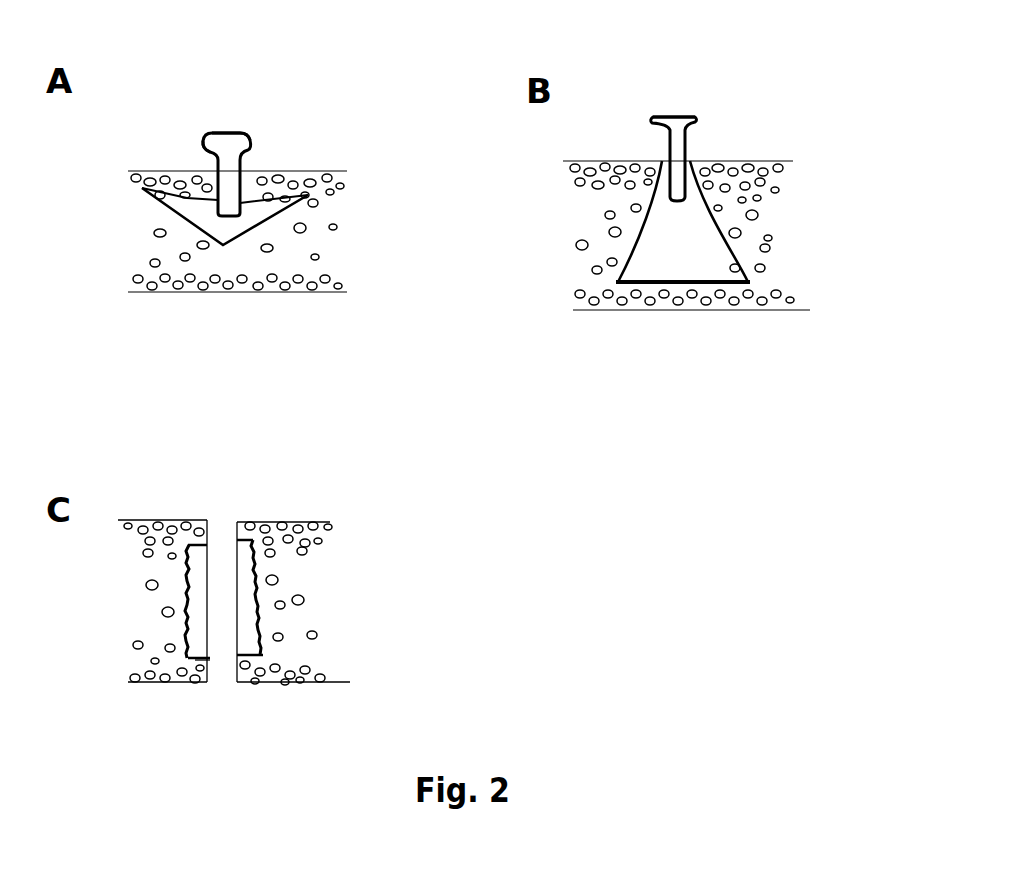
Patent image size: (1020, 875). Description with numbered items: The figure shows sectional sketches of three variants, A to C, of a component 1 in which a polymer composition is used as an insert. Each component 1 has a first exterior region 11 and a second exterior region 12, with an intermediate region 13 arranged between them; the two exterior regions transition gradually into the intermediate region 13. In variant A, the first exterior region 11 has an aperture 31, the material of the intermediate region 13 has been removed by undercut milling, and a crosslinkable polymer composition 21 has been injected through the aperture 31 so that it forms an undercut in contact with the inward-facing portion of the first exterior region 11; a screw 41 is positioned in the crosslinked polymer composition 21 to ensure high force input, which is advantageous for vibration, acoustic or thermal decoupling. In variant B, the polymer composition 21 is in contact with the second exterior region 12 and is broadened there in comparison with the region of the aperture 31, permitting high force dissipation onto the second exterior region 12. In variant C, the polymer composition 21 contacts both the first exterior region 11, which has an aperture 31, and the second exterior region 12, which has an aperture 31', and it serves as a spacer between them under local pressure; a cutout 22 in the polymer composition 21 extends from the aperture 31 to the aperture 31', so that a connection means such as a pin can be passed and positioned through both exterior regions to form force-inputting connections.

The component 1 is at (310, 86).
The first exterior region 11 is at (333, 175).
The second exterior region 12 is at (333, 278).
The intermediate region 13 is at (343, 183).
The polymer composition 21 is at (170, 214).
The cutout 22 is at (217, 567).
The aperture 31 is at (495, 387).
The aperture 31' is at (271, 705).
The screw 41 is at (205, 146).